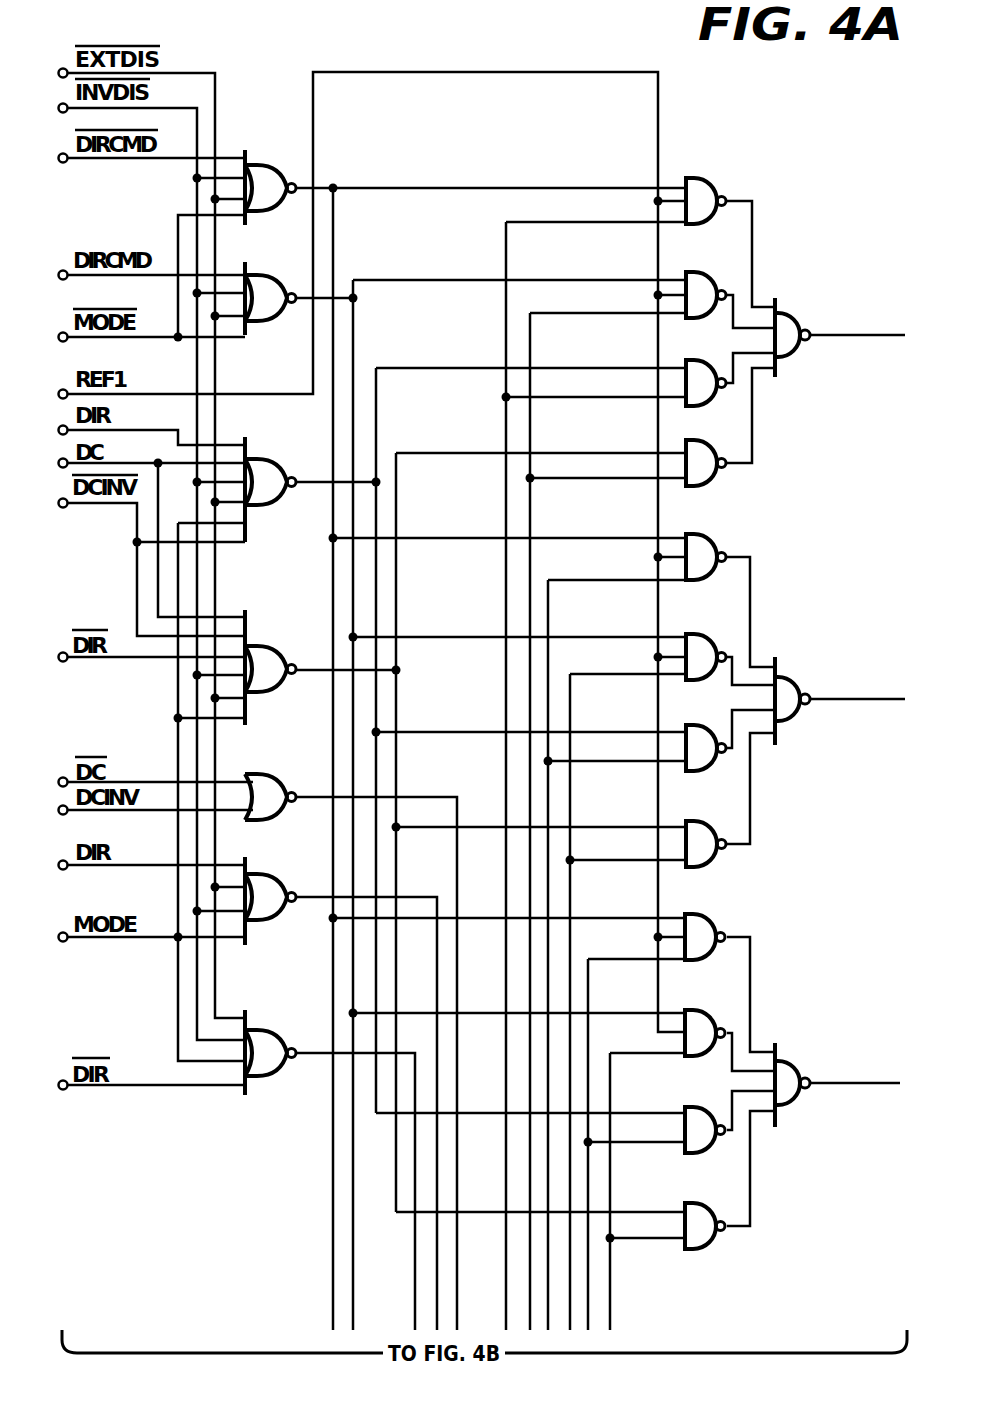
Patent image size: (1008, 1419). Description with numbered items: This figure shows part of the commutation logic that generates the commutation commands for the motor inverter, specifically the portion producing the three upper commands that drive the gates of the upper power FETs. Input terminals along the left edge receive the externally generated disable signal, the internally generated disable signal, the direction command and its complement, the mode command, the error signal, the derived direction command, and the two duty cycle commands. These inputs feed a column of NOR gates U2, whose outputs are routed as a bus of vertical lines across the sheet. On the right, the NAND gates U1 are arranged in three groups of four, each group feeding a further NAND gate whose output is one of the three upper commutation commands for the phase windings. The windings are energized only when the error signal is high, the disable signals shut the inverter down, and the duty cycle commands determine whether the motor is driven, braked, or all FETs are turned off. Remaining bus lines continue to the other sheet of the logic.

The NAND gates U1 is at (505, 177).
The NOR gates U2 is at (459, 63).